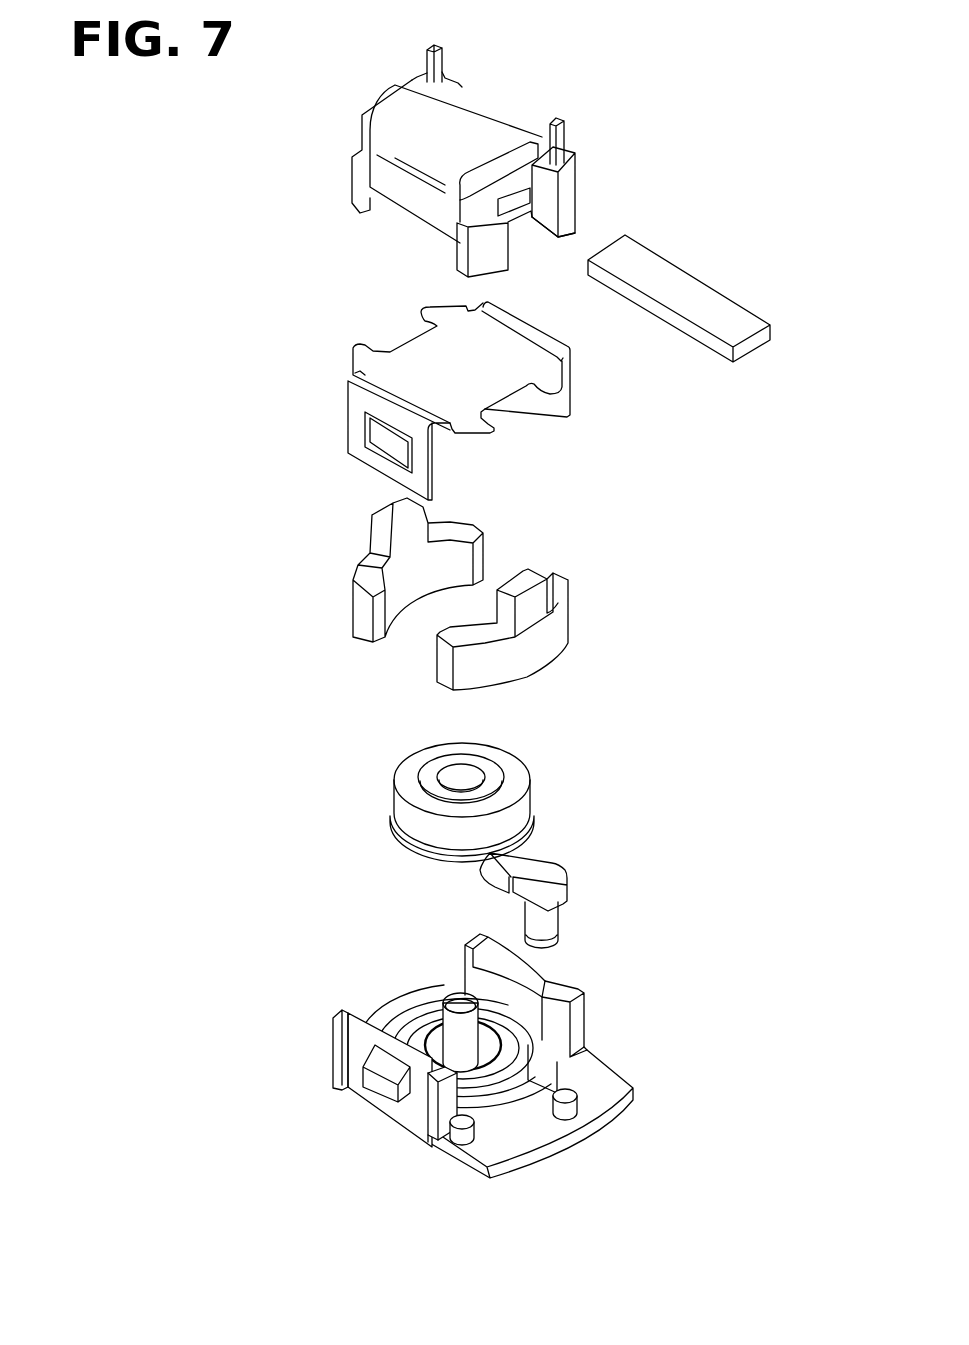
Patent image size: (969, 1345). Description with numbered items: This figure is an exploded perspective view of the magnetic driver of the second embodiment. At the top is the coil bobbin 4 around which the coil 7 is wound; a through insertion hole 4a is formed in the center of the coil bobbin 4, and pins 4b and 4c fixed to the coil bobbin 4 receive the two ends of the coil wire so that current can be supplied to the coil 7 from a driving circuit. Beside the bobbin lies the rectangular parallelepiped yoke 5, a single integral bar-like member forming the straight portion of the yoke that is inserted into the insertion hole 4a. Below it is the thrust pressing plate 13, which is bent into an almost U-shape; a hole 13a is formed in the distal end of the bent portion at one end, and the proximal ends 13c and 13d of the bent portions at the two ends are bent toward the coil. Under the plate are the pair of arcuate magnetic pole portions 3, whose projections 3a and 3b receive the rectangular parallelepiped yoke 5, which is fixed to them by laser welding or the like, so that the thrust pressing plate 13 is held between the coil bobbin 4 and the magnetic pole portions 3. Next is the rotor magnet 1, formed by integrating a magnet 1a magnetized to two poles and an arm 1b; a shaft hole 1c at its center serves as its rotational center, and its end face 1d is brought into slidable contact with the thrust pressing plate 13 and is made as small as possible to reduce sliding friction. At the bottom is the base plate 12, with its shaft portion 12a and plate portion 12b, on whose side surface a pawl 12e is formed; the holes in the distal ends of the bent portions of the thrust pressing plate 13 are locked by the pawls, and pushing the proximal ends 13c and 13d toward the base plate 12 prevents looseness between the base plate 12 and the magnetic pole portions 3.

The rotor magnet 1 is at (473, 821).
The magnet 1a is at (518, 817).
The arm 1b is at (543, 880).
The shaft hole 1c is at (460, 777).
The end face 1d is at (430, 772).
The magnetic pole portions 3 is at (435, 586).
The projection 3a is at (398, 507).
The projection 3b is at (532, 578).
The coil bobbin 4 is at (358, 185).
The insertion hole 4a is at (527, 210).
The pin 4b is at (435, 45).
The pin 4c is at (558, 118).
The rectangular parallelepiped yoke 5 is at (680, 290).
The coil 7 is at (422, 208).
The base plate 12 is at (442, 1061).
The shaft pin 12a is at (460, 998).
The base plate 12b is at (520, 1127).
The pawl 12e is at (387, 1062).
The thrust pressing plate 13 is at (350, 352).
The hole 13a is at (385, 442).
The proximal end 13c is at (372, 398).
The proximal end 13d is at (520, 327).